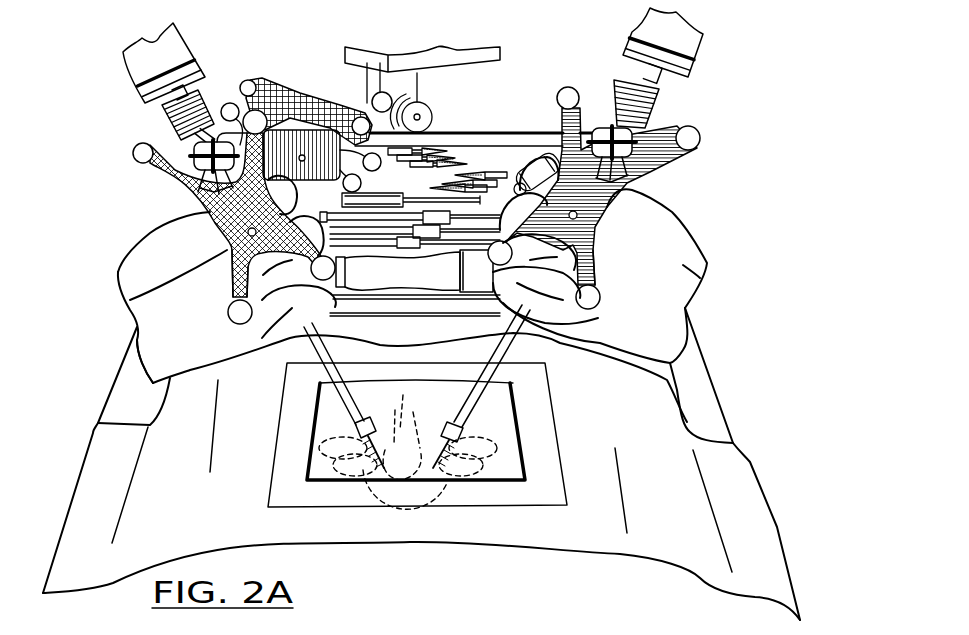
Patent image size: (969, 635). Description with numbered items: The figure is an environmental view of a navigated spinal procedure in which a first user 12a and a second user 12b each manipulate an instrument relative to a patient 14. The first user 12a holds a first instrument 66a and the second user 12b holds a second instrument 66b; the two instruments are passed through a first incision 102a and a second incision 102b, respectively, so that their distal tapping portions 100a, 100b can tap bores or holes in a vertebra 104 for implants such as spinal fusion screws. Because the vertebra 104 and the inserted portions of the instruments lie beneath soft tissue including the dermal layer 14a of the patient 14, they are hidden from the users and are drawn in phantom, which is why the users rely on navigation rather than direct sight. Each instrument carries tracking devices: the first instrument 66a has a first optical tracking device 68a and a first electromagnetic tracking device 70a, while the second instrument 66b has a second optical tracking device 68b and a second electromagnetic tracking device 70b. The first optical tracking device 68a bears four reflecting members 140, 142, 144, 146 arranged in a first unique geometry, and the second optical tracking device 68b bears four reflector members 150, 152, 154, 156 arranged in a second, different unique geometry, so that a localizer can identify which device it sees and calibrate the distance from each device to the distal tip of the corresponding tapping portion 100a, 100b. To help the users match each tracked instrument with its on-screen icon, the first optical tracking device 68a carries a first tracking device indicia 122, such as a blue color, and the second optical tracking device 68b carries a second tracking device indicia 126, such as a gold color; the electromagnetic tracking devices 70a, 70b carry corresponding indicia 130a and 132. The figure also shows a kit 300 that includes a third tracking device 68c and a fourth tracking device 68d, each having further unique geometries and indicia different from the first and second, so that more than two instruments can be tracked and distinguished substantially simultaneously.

The first user 12a is at (155, 227).
The second user 12b is at (672, 210).
The patient 14 is at (417, 400).
The dermal layer 14a is at (614, 483).
The first instrument 66a is at (133, 91).
The second instrument 66b is at (697, 72).
The first optical tracking device 68a is at (218, 233).
The second optical tracking device 68b is at (608, 215).
The third tracking device 68c is at (243, 106).
The fourth tracking device 68d is at (256, 88).
The first electromagnetic tracking device 70a is at (193, 183).
The second electromagnetic tracking device 70b is at (640, 133).
The first tapping portion 100a is at (327, 417).
The second tapping portion 100b is at (500, 418).
The first incision 102a is at (347, 457).
The second incision 102b is at (465, 457).
The vertebra 104 is at (410, 520).
The first tracking device indicia 122 is at (130, 300).
The second tracking device indicia 126 is at (683, 265).
The third tracking device indicia 130a is at (187, 147).
The fourth tracking device indicia 132 is at (603, 125).
The reflecting member 140 is at (228, 311).
The reflecting member 142 is at (237, 292).
The reflecting member 144 is at (132, 152).
The reflecting member 146 is at (320, 90).
The reflector member 150 is at (596, 277).
The reflector member 152 is at (600, 296).
The reflector member 154 is at (566, 87).
The reflector member 156 is at (700, 136).
The kit 300 is at (505, 126).